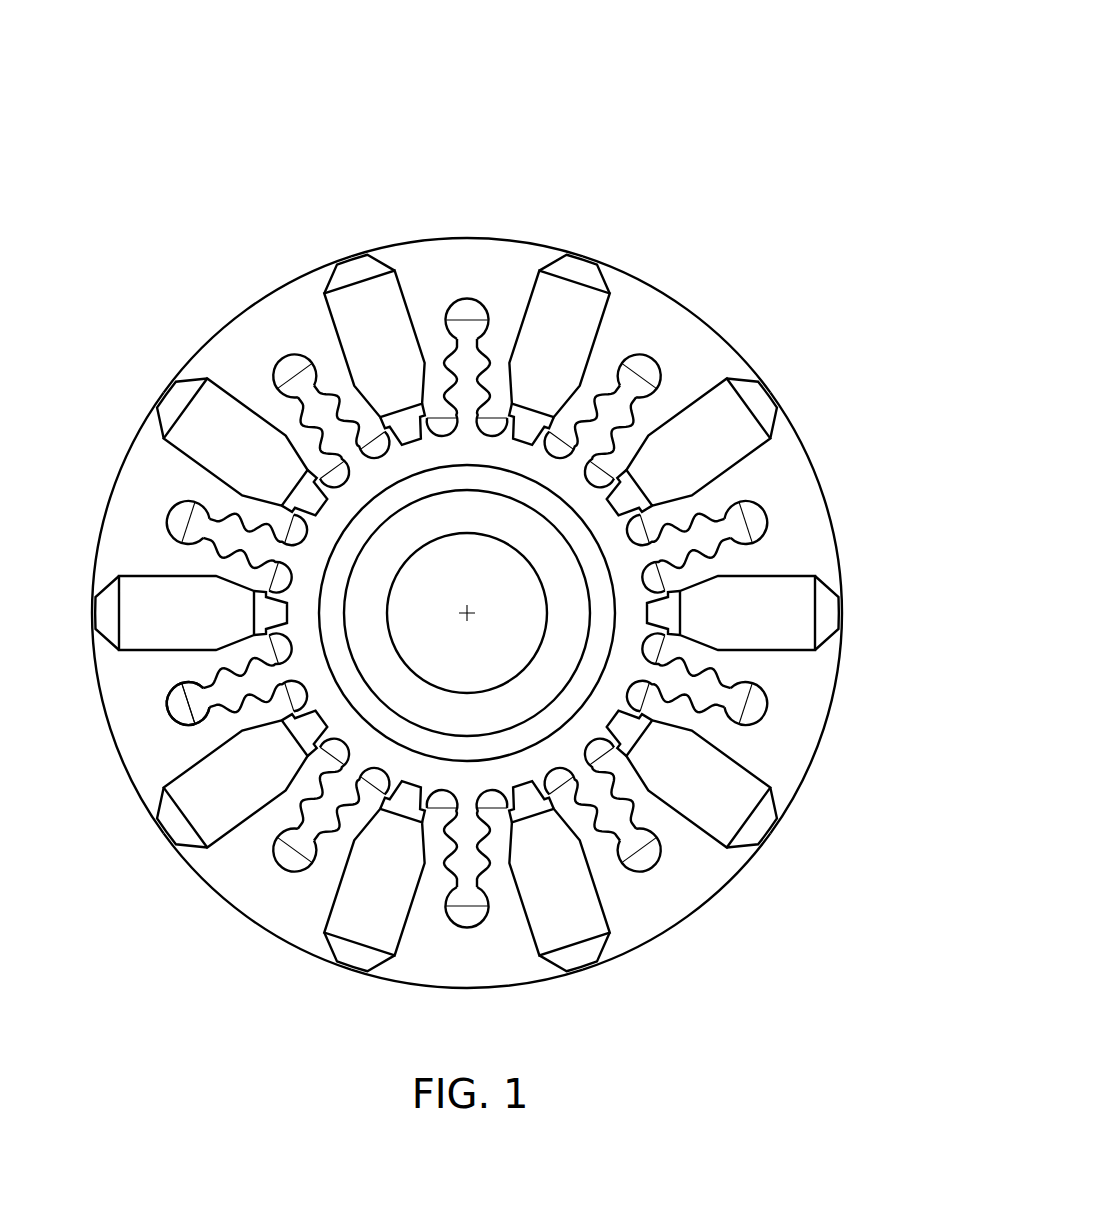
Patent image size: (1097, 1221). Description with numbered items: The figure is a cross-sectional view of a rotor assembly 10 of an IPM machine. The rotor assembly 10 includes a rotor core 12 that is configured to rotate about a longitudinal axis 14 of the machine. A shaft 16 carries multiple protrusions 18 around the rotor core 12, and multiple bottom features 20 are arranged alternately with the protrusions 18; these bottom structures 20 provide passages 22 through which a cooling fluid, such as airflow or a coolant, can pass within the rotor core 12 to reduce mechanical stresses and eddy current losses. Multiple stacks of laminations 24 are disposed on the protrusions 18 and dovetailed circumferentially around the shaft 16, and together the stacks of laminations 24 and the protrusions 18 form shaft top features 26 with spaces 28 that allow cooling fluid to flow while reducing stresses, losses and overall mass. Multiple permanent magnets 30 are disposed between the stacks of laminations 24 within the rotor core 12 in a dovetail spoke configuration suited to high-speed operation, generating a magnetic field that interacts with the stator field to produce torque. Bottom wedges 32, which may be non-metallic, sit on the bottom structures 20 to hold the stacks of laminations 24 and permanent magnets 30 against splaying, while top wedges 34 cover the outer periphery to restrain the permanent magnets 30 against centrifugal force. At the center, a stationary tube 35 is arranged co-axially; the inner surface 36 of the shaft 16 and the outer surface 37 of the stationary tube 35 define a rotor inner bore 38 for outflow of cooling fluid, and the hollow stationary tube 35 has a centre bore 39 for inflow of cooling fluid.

The rotor assembly 10 is at (502, 496).
The rotor core 12 is at (812, 490).
The longitudinal axis 14 is at (468, 610).
The shaft 16 is at (533, 693).
The protrusions 18 is at (285, 375).
The bottom features 20 is at (513, 787).
The passages 22 is at (600, 472).
The stacks of laminations 24 is at (397, 258).
The shaft top features 26 is at (169, 707).
The spaces 28 is at (468, 305).
The permanent magnets 30 is at (721, 423).
The bottom wedges 32 is at (277, 612).
The top wedges 34 is at (770, 395).
The stationary tube 35 is at (460, 697).
The inner surface 36 is at (484, 471).
The outer surface 37 is at (405, 508).
The rotor inner bore 38 is at (384, 693).
The centre bore 39 is at (650, 640).